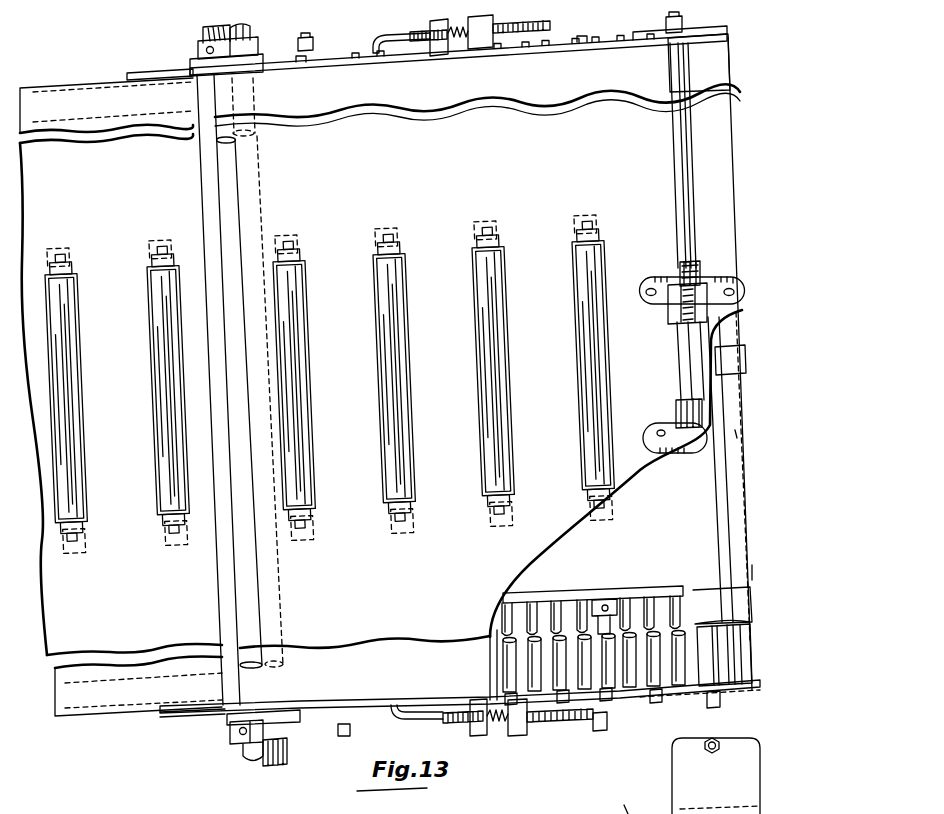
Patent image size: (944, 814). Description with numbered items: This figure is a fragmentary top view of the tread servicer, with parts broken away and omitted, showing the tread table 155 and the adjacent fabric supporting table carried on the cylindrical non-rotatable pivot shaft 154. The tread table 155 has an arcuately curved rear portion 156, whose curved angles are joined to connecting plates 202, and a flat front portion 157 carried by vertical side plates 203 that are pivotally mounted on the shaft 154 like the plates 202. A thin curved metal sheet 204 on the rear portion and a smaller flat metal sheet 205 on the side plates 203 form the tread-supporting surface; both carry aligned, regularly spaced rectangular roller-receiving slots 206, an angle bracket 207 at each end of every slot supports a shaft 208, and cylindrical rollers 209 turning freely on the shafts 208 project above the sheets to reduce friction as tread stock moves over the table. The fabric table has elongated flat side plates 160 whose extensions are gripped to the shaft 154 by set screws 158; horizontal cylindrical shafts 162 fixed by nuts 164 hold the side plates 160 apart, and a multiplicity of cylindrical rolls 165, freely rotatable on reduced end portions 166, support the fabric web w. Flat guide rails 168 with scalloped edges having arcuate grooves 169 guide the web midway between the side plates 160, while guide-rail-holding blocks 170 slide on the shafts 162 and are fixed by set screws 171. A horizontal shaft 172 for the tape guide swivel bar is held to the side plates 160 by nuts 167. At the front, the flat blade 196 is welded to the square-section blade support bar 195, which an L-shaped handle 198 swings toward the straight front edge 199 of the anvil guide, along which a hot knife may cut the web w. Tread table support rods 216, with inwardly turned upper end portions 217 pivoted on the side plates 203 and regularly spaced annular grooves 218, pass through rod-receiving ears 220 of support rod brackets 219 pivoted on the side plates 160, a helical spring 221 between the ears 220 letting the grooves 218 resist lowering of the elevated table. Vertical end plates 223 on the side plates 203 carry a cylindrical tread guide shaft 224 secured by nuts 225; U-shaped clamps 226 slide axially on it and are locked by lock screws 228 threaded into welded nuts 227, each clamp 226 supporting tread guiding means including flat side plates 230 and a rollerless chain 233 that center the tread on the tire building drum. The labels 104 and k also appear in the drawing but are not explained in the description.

The tread table 155 is at (80, 84).
The arcuately curved portion 156 is at (142, 718).
The connecting plates 202 is at (141, 74).
The vertical side plates 203 is at (541, 48).
The set screws 158 is at (198, 50).
The pivot shaft 154 is at (210, 200).
The thin curved metal sheet 204 is at (203, 187).
The flat metal sheet 205 is at (230, 182).
The flat portion 157 is at (340, 59).
The nuts 167 is at (303, 62).
The inwardly turned upper end portions 217 is at (369, 54).
The threaded rod 104 is at (445, 44).
The support rod brackets 219 is at (443, 57).
The helical spring 221 is at (486, 49).
The annular grooves 218 is at (527, 24).
The nuts 164 is at (584, 36).
The nuts 225 is at (684, 22).
The tread guide shaft 224 is at (668, 132).
The front edge 199 is at (749, 498).
The blade support bar 195 is at (733, 556).
The dimension k is at (753, 572).
The fabric web w is at (737, 432).
The L-shaped handle 198 is at (746, 360).
The nut 227 is at (702, 276).
The rollerless chain 233 is at (736, 282).
The flat side plates 230 is at (720, 293).
The U-shaped clamps 226 is at (688, 372).
The lock screw 228 is at (685, 272).
The guide rails 168 is at (660, 592).
The cylindrical rolls 165 is at (577, 606).
The set screws 171 is at (607, 600).
The guide-rail-holding blocks 170 is at (603, 604).
The blade 196 is at (746, 658).
The vertical end plates 223 is at (742, 697).
The reduced end portions 166 is at (660, 696).
The side plates 160 is at (606, 693).
The horizontal cylindrical shafts 162 is at (603, 731).
The horizontal shaft 172 is at (341, 730).
The tread table support rods 216 is at (472, 700).
The rod-receiving ears 220 is at (511, 733).
The arcuate grooves 169 is at (645, 801).
The roller-receiving slots 206 is at (166, 425).
The angle bracket 207 is at (150, 250).
The shaft 208 is at (170, 552).
The cylindrical rollers 209 is at (163, 342).